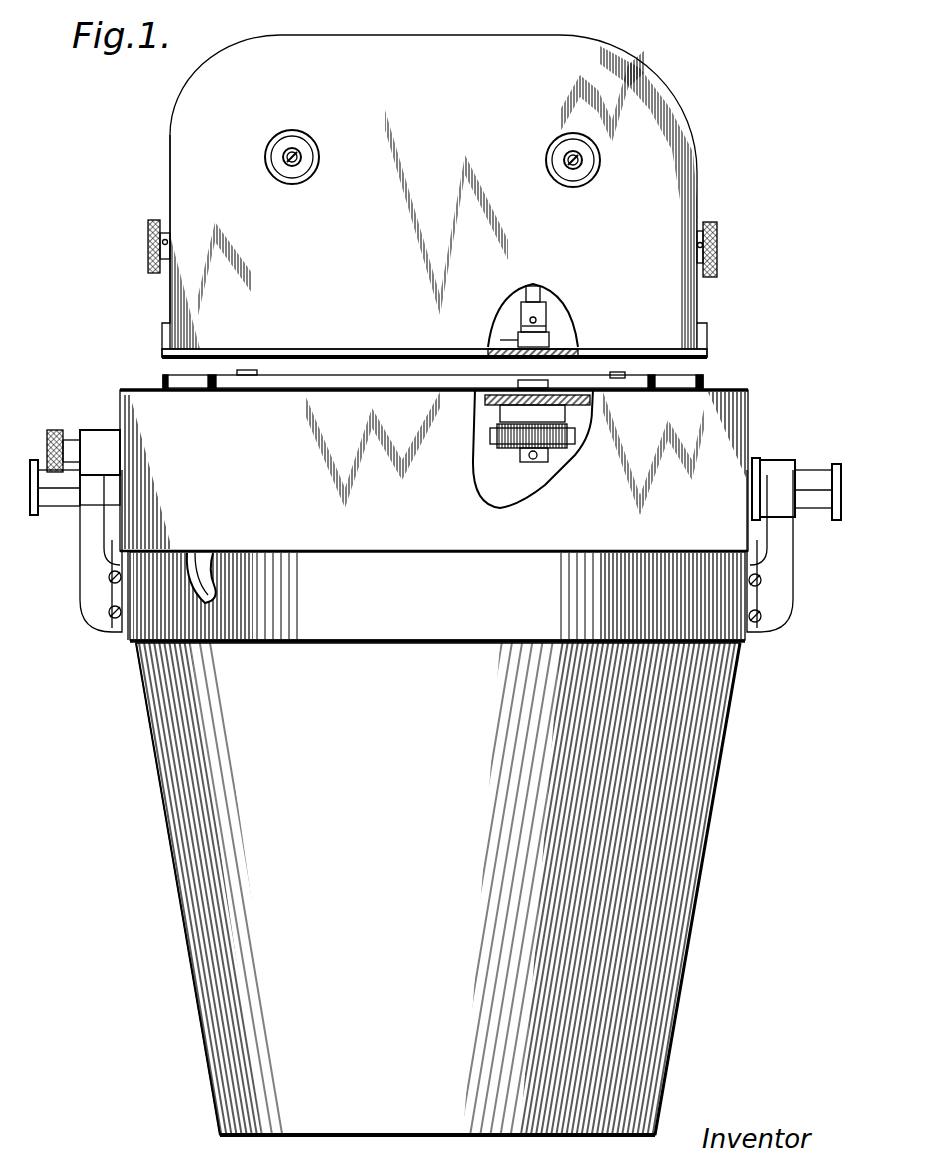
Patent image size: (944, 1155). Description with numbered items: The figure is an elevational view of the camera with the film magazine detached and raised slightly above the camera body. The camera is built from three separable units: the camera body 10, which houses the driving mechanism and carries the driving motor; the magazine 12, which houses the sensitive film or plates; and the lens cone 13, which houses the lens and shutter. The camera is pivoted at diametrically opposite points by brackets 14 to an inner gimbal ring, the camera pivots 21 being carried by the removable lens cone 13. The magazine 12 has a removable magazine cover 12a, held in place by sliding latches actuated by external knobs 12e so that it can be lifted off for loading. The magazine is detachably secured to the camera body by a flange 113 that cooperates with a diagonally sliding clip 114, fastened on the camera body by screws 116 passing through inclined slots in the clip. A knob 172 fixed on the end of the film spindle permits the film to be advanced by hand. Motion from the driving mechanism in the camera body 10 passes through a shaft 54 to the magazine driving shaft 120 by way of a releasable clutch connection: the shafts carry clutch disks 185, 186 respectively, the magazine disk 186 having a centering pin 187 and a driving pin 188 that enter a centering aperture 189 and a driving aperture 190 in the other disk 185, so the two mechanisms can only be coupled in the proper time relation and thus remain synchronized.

The camera body 10 is at (434, 470).
The magazine 12 is at (434, 196).
The magazine cover 12a is at (182, 170).
The external knobs 12e is at (148, 256).
The lens cone 13 is at (436, 843).
The brackets 14 is at (82, 580).
The camera pivots 21 is at (62, 495).
The shaft 54 is at (540, 456).
The flange 113 is at (298, 338).
The sliding clip 114 is at (180, 384).
The screws 116 is at (258, 372).
The magazine driving shaft 120 is at (540, 293).
The knob 172 is at (580, 172).
The clutch disk 185 is at (567, 415).
The clutch disk 186 is at (548, 358).
The centering pin 187 is at (548, 398).
The driving pin 188 is at (498, 395).
The centering aperture 189 is at (548, 328).
The driving aperture 190 is at (515, 343).